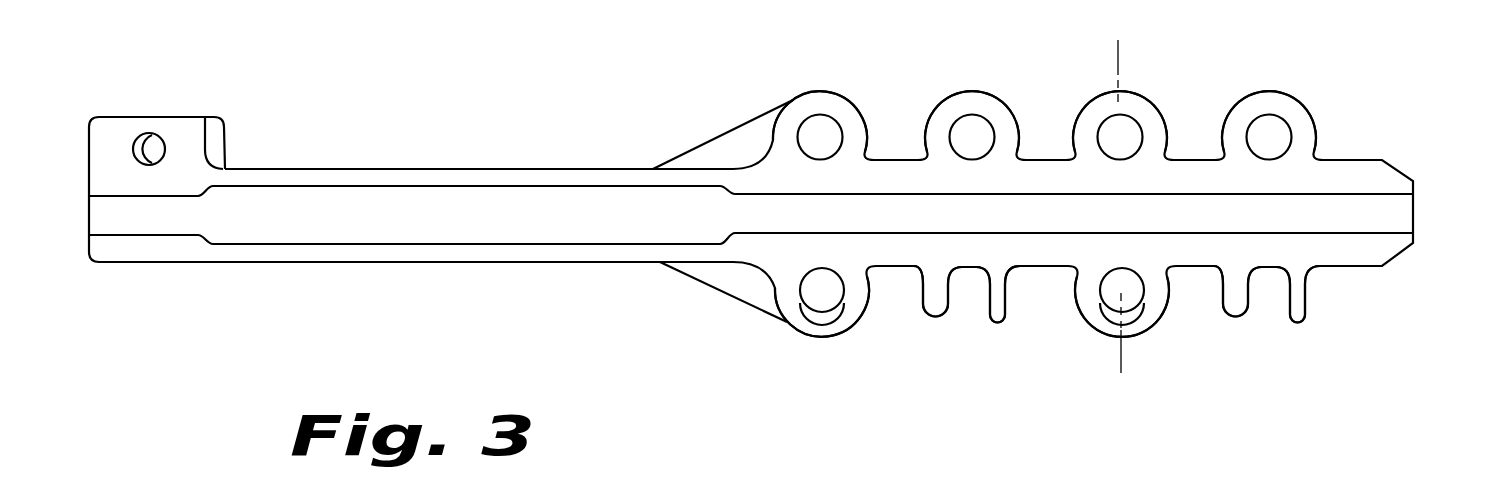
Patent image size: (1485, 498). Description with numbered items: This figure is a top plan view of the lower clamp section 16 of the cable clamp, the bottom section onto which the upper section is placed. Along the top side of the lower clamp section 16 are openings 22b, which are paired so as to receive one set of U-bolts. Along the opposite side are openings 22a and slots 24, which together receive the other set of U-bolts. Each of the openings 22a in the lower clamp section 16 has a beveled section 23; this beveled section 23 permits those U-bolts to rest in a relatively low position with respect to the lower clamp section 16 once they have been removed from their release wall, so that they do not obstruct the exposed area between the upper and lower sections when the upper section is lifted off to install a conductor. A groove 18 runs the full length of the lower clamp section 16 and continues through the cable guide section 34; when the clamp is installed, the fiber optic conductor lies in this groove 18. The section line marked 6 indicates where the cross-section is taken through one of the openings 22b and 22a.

The lower clamp section 16 is at (370, 175).
The groove 18 is at (1405, 213).
The openings 22a is at (813, 290).
The openings 22b is at (817, 137).
The beveled section 23 is at (832, 317).
The slots 24 is at (988, 301).
The cable guide section 34 is at (303, 253).
The section line 6- 6 is at (1118, 40).